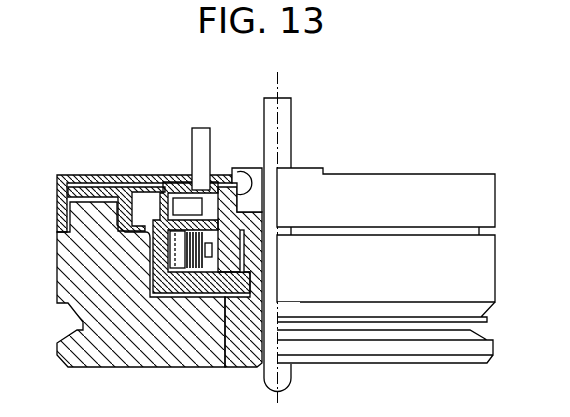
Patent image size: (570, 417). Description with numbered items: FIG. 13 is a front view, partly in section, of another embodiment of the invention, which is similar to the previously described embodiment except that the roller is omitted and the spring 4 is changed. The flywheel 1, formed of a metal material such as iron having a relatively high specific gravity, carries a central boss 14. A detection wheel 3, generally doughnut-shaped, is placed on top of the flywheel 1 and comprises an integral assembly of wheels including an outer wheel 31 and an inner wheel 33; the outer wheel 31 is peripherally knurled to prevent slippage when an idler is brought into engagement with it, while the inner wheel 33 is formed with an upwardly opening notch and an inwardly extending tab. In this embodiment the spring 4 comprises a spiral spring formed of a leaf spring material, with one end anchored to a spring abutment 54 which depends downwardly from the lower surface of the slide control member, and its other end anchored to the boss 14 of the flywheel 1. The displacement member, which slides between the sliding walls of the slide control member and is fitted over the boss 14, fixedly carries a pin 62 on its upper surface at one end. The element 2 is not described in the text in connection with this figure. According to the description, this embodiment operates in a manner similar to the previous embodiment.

The flywheel 1 is at (497, 267).
The guide rod 2 is at (285, 128).
The detection wheel 3 is at (497, 212).
The spring 4 is at (213, 250).
The central boss 14 is at (240, 180).
The outer wheel 31 is at (57, 197).
The inner wheel 33 is at (149, 190).
The spring abutment 54 is at (182, 262).
The pin 62 is at (204, 143).